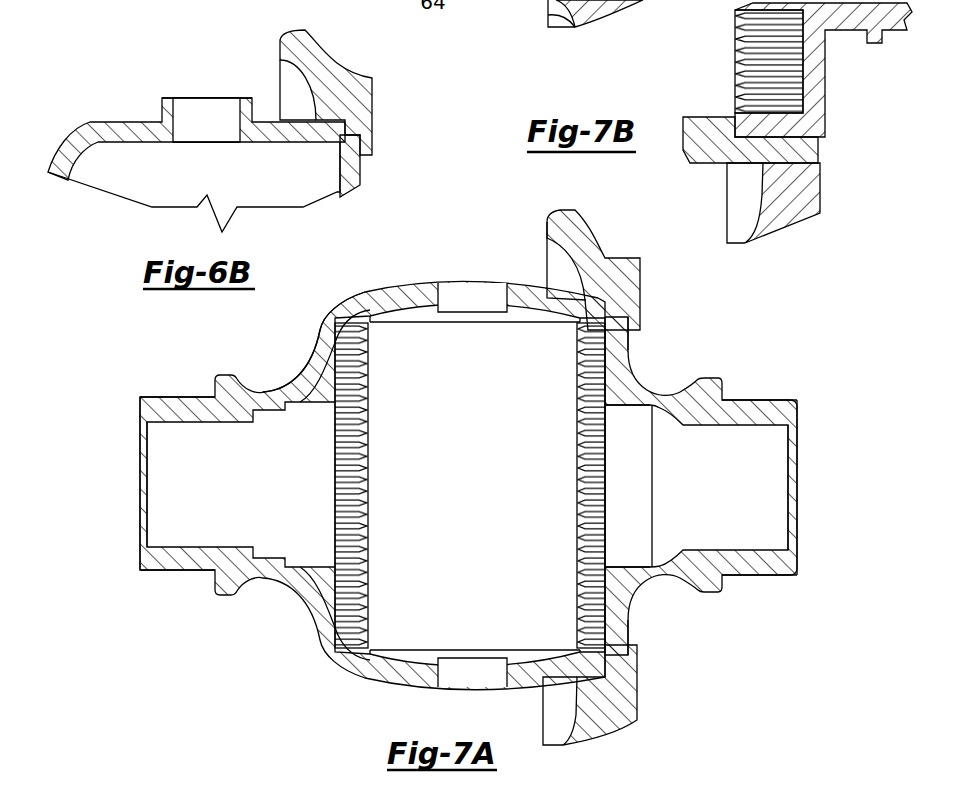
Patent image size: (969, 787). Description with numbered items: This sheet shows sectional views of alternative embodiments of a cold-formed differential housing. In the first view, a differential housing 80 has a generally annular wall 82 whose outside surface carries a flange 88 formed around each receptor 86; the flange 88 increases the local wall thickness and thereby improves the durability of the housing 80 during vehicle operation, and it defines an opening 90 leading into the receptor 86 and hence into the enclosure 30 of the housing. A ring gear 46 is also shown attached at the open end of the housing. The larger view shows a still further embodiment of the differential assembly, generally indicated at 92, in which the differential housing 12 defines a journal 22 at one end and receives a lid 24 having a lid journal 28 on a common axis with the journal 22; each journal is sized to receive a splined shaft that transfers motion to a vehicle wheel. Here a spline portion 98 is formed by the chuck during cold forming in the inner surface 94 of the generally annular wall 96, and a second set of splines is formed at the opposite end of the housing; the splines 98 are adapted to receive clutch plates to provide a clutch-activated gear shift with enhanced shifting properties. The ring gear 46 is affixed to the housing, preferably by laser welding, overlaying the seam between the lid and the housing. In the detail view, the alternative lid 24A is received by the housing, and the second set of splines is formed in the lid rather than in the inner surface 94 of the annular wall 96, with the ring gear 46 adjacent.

In FIG. 7A, the differential housing 12 is at (418, 290).
In FIG. 7A, the journal 22 is at (180, 395).
In FIG. 7A, the lid 24 is at (630, 360).
In FIG. 7B, the lid 24A is at (828, 78).
In FIG. 7A, the lid journal 28 is at (755, 398).
In FIG. 6B, the enclosure 30 is at (158, 177).
In FIG. 6B, the ring gear 46 is at (325, 70).
In FIG. 7B, the ring gear 46 is at (820, 185).
In FIG. 7A, the ring gear 46 is at (600, 242).
In FIG. 6B, the differential housing 80 is at (213, 118).
In FIG. 6B, the annular wall 82 is at (62, 128).
In FIG. 6B, the receptor 86 is at (210, 140).
In FIG. 6B, the flange 88 is at (166, 108).
In FIG. 6B, the opening 90 is at (213, 92).
In FIG. 7A, the differential assembly 92 is at (468, 464).
In FIG. 7A, the inner surface 94 is at (388, 324).
In FIG. 7B, the annular wall 96 is at (705, 125).
In FIG. 7A, the annular wall 96 is at (345, 300).
In FIG. 7B, the spline portion 98 is at (735, 75).
In FIG. 7A, the spline portion 98 is at (352, 460).